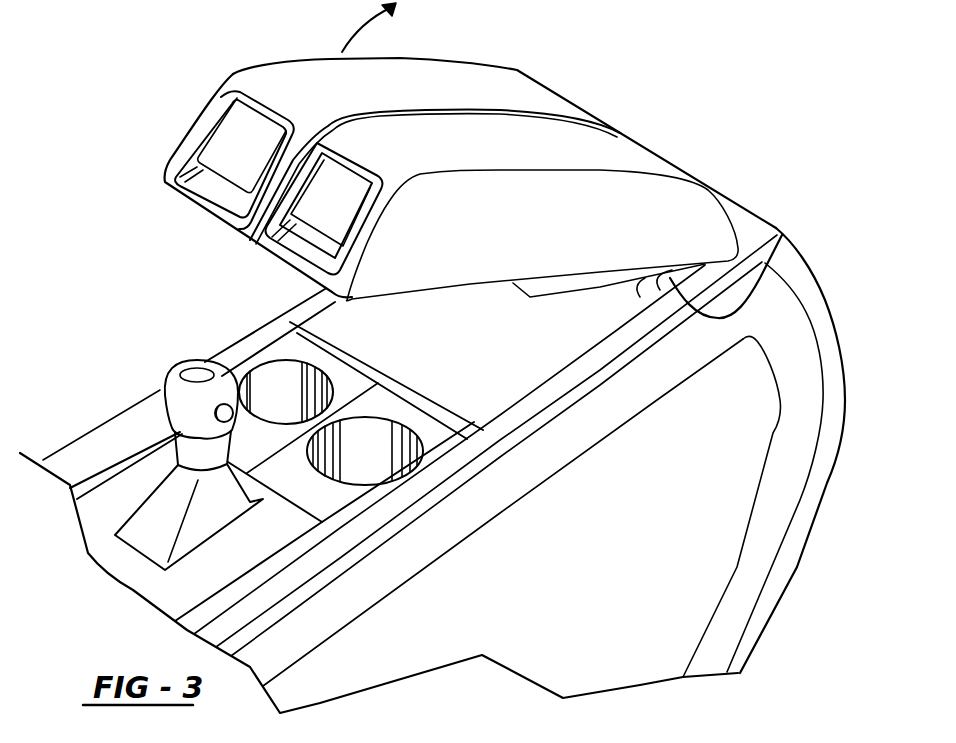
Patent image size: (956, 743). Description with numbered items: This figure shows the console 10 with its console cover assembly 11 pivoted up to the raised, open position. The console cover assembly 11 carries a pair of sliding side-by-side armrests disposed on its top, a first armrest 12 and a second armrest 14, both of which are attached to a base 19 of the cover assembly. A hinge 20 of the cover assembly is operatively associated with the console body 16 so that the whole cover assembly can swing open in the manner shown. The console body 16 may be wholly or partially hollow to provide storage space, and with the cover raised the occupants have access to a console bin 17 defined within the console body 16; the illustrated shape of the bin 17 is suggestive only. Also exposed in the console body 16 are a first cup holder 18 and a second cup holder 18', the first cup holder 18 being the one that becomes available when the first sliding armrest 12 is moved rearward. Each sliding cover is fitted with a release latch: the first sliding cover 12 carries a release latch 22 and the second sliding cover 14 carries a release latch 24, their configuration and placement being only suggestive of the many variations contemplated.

The console 10 is at (216, 43).
The console cover assembly 11 is at (673, 222).
The first armrest 12 is at (600, 143).
The second armrest 14 is at (457, 73).
The console body 16 is at (668, 542).
The console bin 17 is at (333, 322).
The first cup holder 18 is at (402, 564).
The second cup holder 18' is at (205, 452).
The base 19 is at (742, 292).
The hinge 20 is at (670, 278).
The release latch 22 is at (327, 227).
The release latch 24 is at (233, 143).